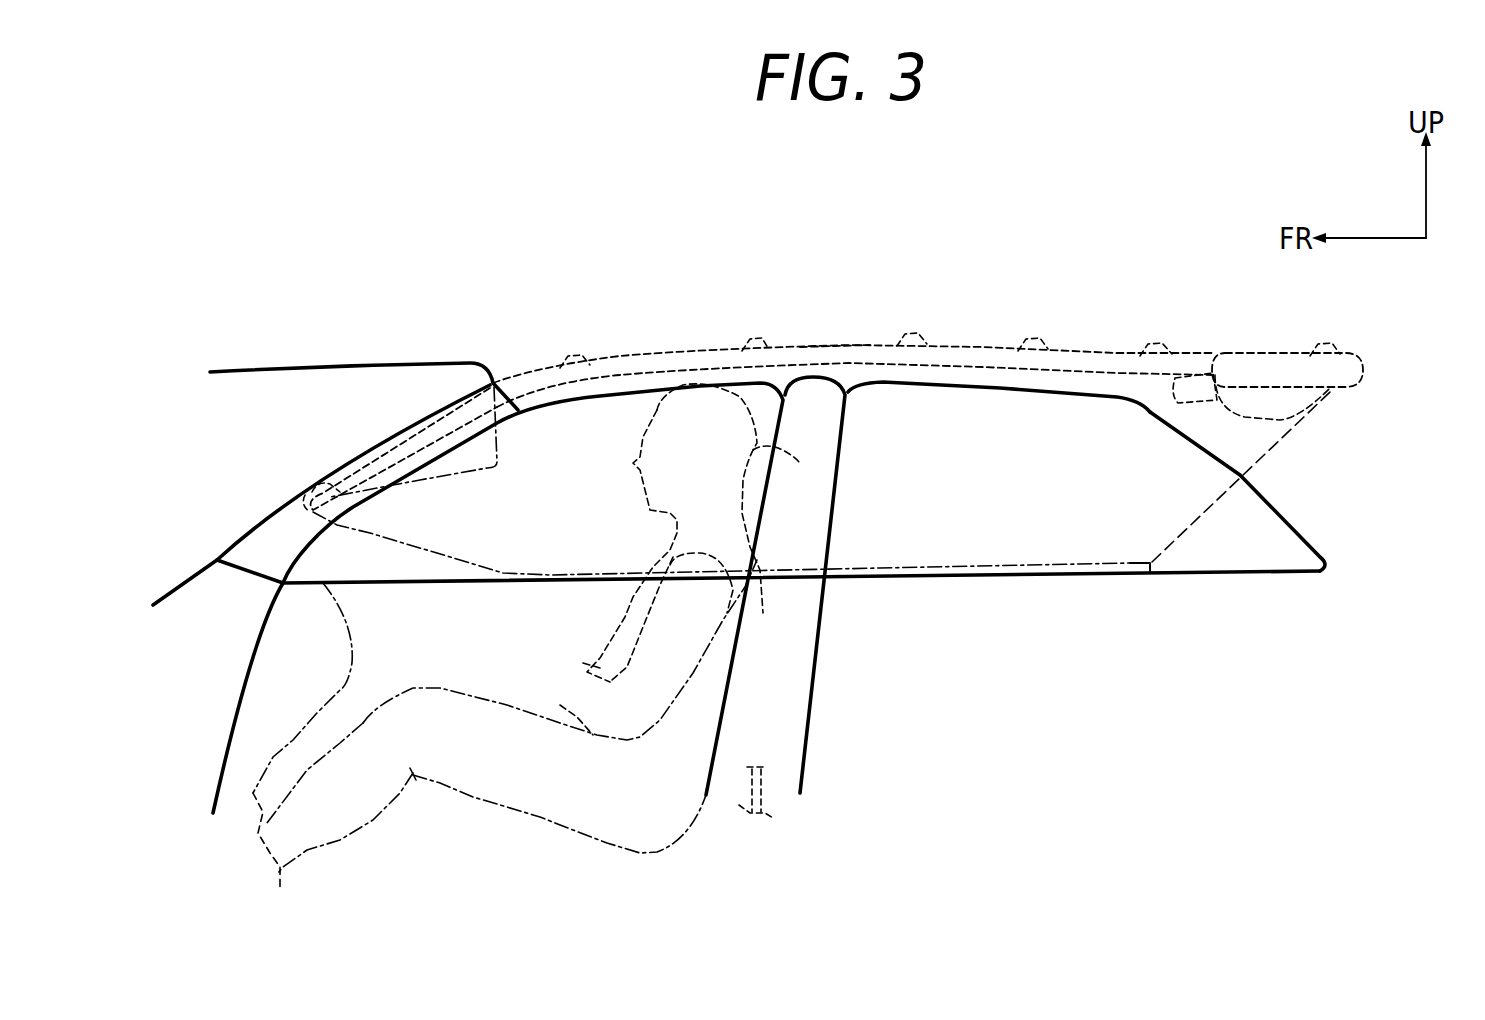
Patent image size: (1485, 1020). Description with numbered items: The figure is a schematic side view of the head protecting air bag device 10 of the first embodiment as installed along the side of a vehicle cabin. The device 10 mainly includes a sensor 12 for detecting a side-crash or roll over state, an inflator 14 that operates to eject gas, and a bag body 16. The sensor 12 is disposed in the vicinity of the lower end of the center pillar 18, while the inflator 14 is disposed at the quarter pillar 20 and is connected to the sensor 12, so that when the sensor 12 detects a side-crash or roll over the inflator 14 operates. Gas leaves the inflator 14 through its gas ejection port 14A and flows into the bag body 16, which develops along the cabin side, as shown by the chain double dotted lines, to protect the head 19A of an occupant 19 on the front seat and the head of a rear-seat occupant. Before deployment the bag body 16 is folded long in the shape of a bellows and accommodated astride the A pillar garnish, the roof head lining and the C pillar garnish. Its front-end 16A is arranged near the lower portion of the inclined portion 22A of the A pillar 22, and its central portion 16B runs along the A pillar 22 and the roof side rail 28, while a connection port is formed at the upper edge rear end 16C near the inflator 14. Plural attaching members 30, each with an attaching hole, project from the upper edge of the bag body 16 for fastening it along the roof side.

The head protecting air bag device 10 is at (1115, 275).
The sensor 12 is at (767, 778).
The inflator 14 is at (1363, 372).
The gas ejection port 14A is at (1290, 415).
The bag body 16 is at (1080, 344).
The front-end 16A is at (313, 520).
The central portion 16B is at (834, 344).
The upper edge rear end 16C is at (1205, 353).
The center pillar 18 is at (814, 682).
The occupant 19 is at (530, 814).
The head 19A is at (775, 447).
The quarter pillar 20 is at (1290, 518).
The A pillar 22 is at (438, 411).
The inclined portion 22A is at (283, 507).
The roof side rail 28 is at (975, 374).
The attaching members 30 is at (323, 482).